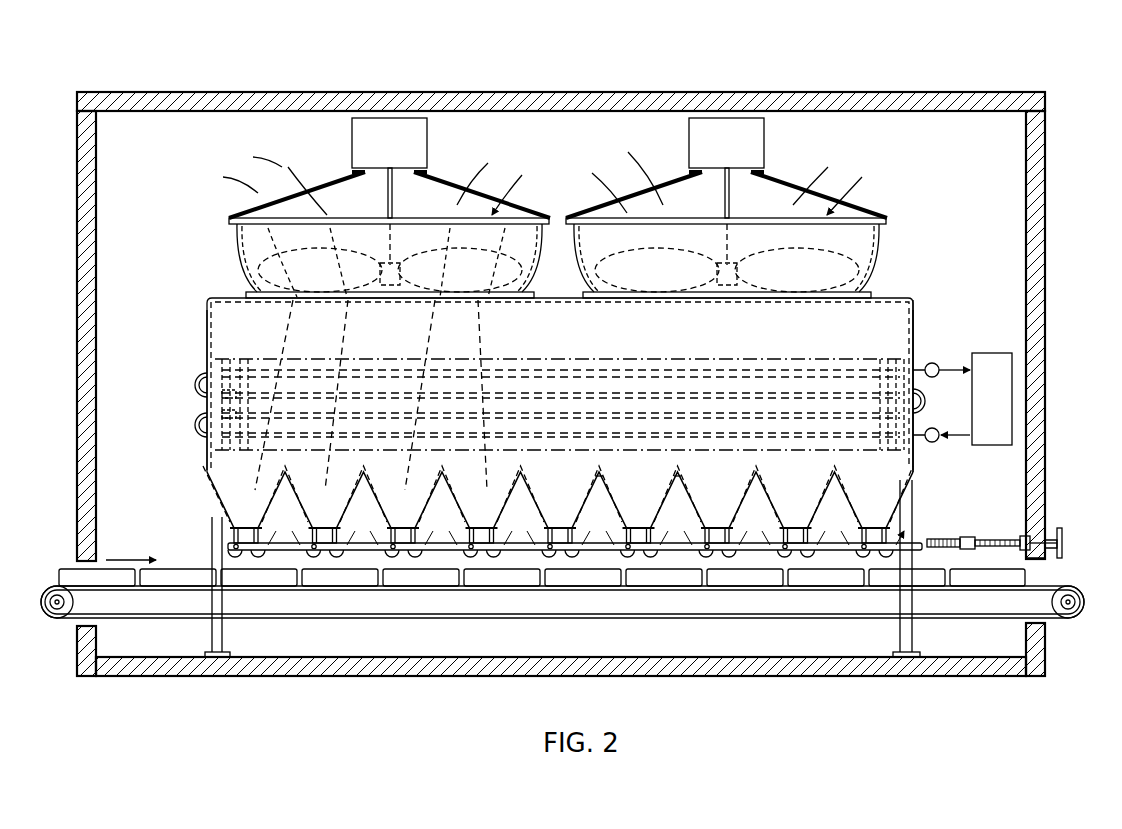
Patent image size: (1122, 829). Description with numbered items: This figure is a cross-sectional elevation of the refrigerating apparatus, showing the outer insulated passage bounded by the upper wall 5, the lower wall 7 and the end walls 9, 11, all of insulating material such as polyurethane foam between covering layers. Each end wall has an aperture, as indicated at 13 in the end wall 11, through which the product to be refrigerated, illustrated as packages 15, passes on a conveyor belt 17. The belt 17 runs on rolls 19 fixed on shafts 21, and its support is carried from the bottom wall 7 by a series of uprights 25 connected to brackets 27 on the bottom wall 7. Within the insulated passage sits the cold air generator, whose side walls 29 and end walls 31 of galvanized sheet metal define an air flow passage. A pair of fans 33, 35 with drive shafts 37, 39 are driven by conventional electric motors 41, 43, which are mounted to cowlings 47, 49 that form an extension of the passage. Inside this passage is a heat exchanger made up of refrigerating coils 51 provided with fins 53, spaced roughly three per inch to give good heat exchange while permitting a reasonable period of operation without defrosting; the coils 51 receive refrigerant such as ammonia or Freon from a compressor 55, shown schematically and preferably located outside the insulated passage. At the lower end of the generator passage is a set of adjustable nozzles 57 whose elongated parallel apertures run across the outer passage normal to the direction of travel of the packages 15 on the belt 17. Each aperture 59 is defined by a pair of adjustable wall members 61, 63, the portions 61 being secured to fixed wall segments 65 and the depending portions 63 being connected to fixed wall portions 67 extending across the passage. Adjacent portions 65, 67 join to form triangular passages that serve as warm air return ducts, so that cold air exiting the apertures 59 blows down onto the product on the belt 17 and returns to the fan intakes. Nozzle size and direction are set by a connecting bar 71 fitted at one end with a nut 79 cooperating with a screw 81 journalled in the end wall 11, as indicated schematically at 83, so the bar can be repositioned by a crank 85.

The upper wall 5 is at (557, 93).
The lower wall 7 is at (300, 677).
The end wall 9 is at (76, 322).
The end wall 11 is at (1046, 248).
The aperture 13 is at (82, 568).
The packages 15 is at (188, 566).
The conveyor belt 17 is at (1050, 586).
The rolls 19 is at (67, 601).
The shafts 21 is at (57, 606).
The uprights 25 is at (211, 641).
The brackets 27 is at (918, 310).
The side walls 29 is at (878, 306).
The end walls 31 is at (207, 337).
The fan 33 is at (440, 256).
The fan 35 is at (775, 256).
The drive shaft 37 is at (393, 196).
The drive shaft 39 is at (730, 196).
The electric motor 41 is at (400, 154).
The electric motor 43 is at (737, 154).
The cowling 47 is at (240, 249).
The cowling 49 is at (868, 250).
The refrigerating coils 51 is at (196, 389).
The fins 53 is at (240, 358).
The compressor 55 is at (1004, 409).
The adjustable nozzles 57 is at (612, 508).
The aperture 59 is at (716, 538).
The adjustable wall member 61 is at (627, 535).
The adjustable wall member 63 is at (653, 535).
The fixed wall segment 65 is at (604, 482).
The fixed wall portion 67 is at (672, 480).
The connecting bar 71 is at (920, 543).
The nut 79 is at (972, 527).
The screw 81 is at (1007, 527).
The journal 83 is at (1052, 530).
The crank 85 is at (1064, 534).